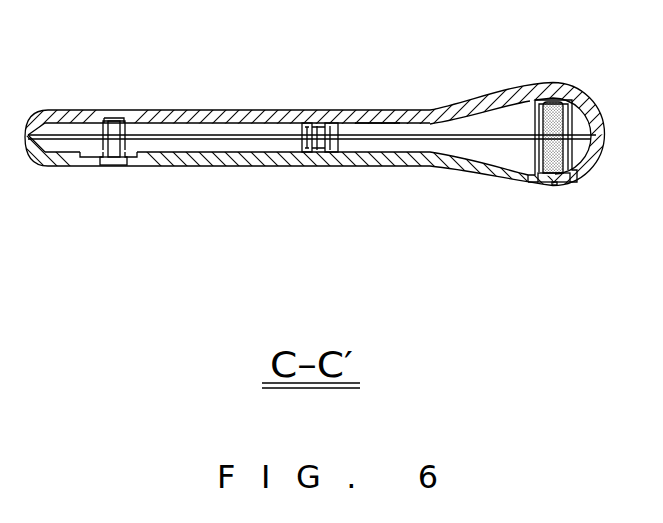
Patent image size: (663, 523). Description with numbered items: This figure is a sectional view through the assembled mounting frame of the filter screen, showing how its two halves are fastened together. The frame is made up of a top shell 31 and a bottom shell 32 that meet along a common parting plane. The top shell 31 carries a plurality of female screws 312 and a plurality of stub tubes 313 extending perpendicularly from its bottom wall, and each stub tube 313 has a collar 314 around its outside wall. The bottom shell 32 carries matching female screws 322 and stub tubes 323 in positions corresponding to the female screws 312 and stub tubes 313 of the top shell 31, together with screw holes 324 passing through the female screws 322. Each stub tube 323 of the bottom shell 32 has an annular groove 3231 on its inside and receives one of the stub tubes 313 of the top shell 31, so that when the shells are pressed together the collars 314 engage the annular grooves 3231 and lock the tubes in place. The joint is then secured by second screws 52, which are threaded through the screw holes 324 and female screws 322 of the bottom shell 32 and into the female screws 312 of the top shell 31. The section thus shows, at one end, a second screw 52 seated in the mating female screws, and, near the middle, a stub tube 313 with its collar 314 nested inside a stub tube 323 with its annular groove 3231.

The top shell 31 is at (453, 101).
The female screws 312 is at (156, 111).
The stub tubes 313 is at (335, 123).
The collar 314 is at (369, 110).
The bottom shell 32 is at (441, 165).
The female screws 322 is at (86, 158).
The stub tubes 323 is at (300, 155).
The annular groove 3231 is at (308, 155).
The screw holes 324 is at (128, 165).
The second screws 52 is at (113, 167).